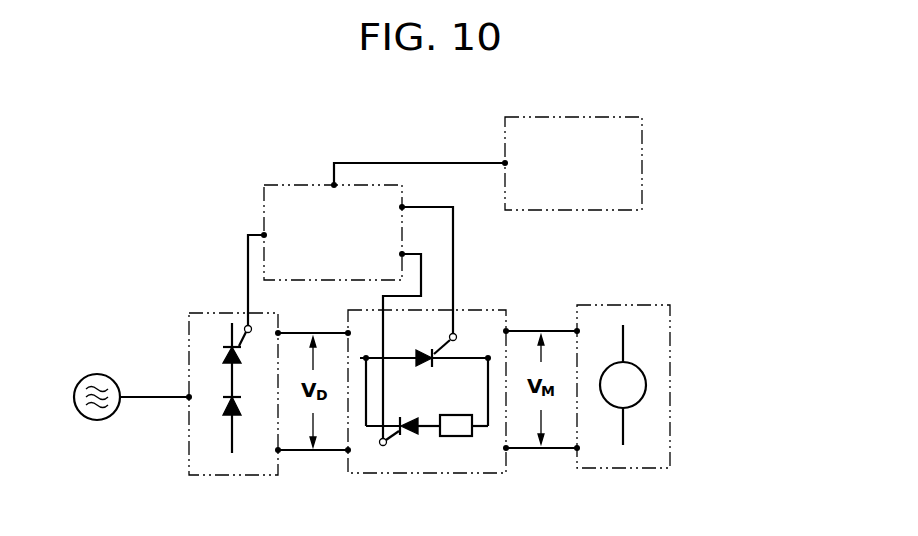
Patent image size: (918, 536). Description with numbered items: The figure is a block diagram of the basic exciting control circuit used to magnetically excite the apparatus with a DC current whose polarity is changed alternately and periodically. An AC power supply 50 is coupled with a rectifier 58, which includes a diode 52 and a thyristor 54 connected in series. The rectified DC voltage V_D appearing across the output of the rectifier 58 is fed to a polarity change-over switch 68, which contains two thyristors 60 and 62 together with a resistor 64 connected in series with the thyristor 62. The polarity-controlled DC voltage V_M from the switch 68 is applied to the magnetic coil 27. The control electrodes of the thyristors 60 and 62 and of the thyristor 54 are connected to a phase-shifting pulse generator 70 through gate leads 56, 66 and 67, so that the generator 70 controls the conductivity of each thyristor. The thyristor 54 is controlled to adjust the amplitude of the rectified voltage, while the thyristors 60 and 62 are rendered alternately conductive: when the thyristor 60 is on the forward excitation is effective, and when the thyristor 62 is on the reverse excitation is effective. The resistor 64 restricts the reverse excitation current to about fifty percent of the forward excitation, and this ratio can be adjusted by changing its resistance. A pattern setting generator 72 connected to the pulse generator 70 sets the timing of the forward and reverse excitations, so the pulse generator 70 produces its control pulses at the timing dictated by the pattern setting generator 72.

The magnetic coil 27 is at (670, 435).
The AC power supply 50 is at (105, 374).
The diode 52 is at (229, 412).
The thyristor 54 is at (241, 355).
The gate lead 56 is at (247, 287).
The rectifier 58 is at (280, 478).
The thyristor 60 is at (425, 352).
The thyristor 62 is at (407, 441).
The resistor 64 is at (459, 436).
The gate lead 66 is at (455, 250).
The gate lead 67 is at (383, 296).
The polarity change-over switch 68 is at (500, 474).
The phase-shifting pulse generator 70 is at (264, 225).
The pattern setting generator 72 is at (642, 190).